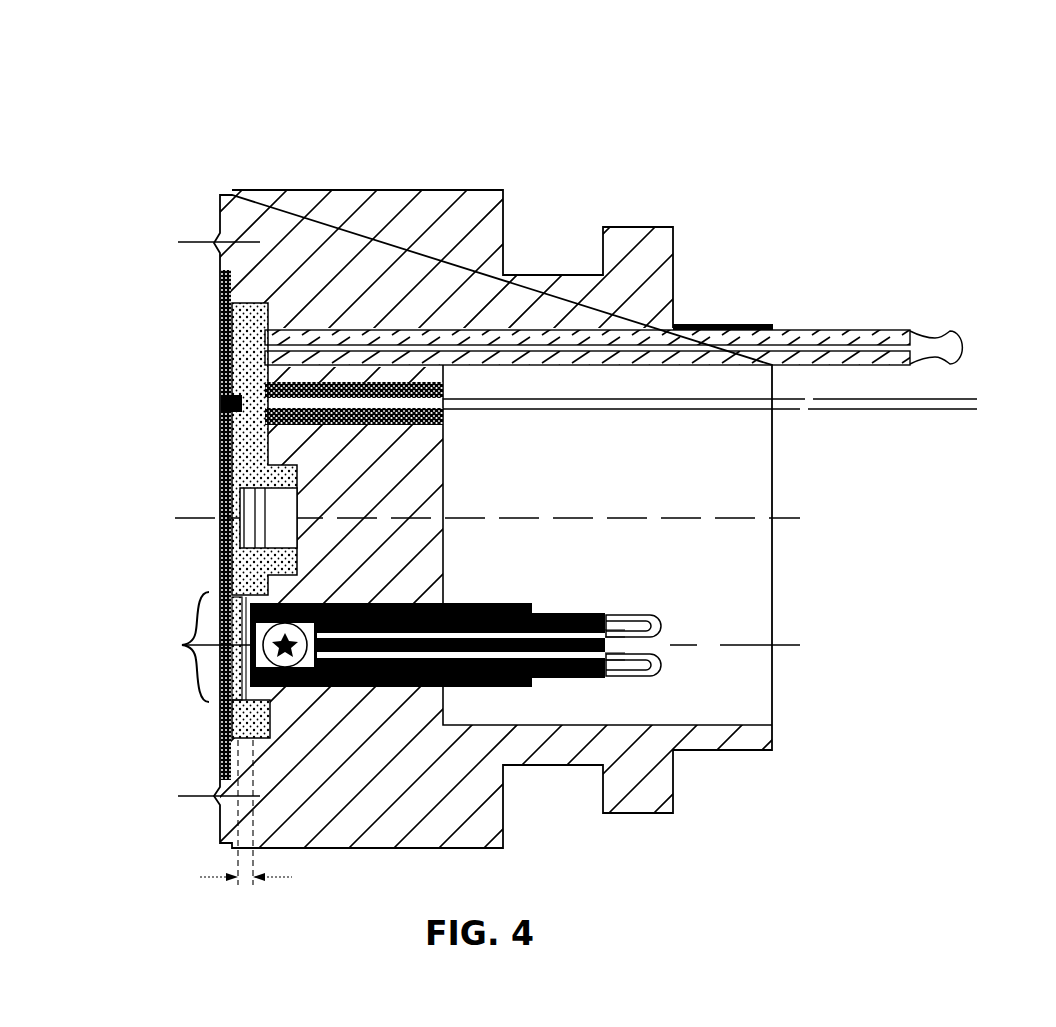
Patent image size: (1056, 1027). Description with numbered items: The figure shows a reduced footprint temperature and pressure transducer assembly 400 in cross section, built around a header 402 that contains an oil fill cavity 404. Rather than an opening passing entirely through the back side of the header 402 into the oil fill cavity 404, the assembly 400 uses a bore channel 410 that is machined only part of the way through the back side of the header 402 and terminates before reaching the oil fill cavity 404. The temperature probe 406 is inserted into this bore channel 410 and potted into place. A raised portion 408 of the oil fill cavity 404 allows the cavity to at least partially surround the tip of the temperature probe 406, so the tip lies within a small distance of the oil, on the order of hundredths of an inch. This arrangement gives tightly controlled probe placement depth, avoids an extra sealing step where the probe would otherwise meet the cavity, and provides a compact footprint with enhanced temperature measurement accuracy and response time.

The temperature and pressure transducer assembly 400 is at (575, 70).
The header 402 is at (478, 193).
The oil fill cavity 404 is at (248, 343).
The temperature probe 406 is at (253, 690).
The raised portion 408 is at (178, 645).
The bore channel 410 is at (355, 595).